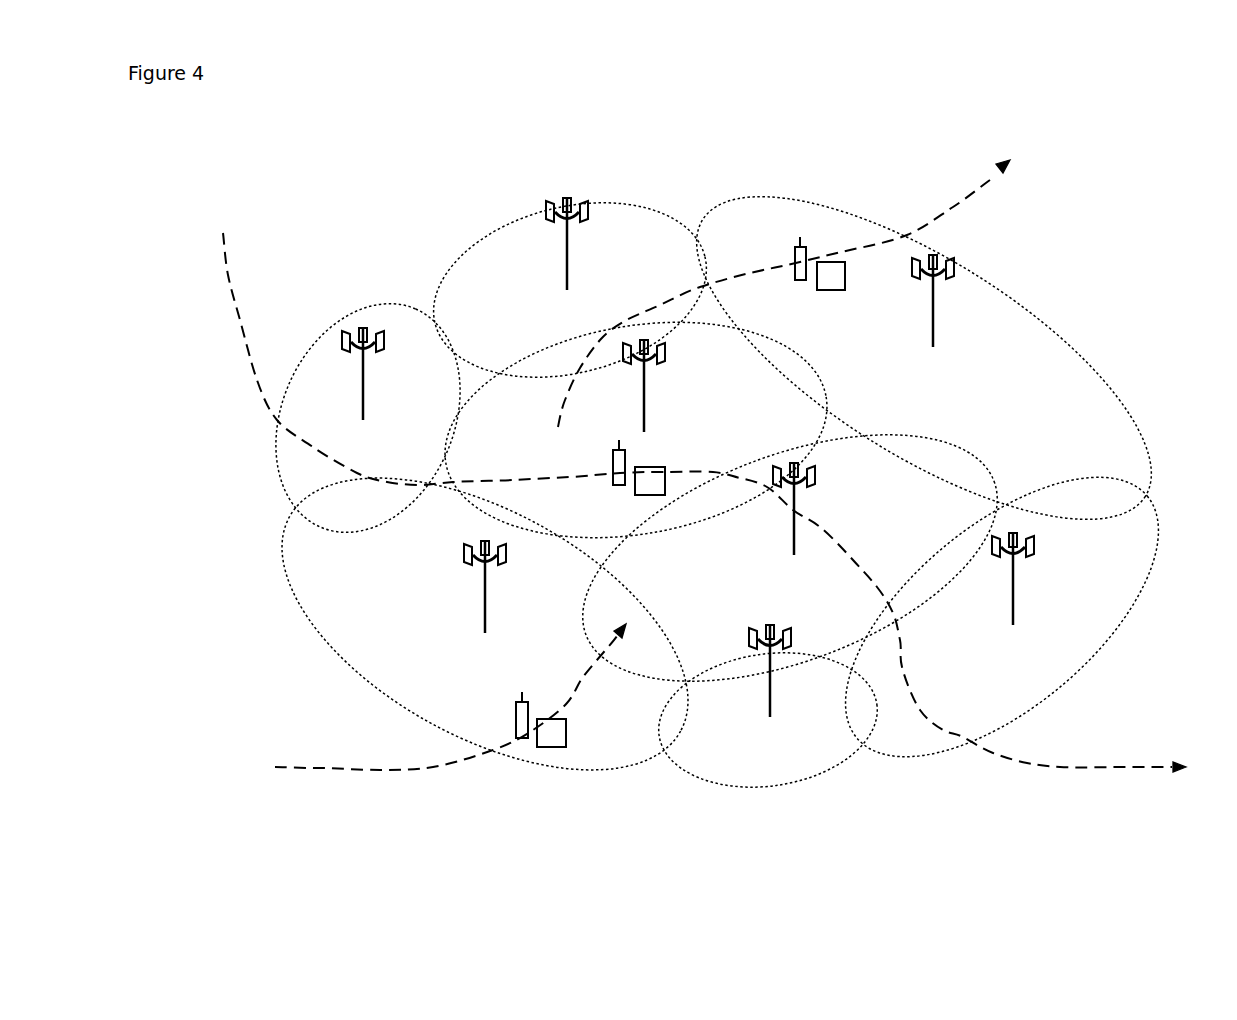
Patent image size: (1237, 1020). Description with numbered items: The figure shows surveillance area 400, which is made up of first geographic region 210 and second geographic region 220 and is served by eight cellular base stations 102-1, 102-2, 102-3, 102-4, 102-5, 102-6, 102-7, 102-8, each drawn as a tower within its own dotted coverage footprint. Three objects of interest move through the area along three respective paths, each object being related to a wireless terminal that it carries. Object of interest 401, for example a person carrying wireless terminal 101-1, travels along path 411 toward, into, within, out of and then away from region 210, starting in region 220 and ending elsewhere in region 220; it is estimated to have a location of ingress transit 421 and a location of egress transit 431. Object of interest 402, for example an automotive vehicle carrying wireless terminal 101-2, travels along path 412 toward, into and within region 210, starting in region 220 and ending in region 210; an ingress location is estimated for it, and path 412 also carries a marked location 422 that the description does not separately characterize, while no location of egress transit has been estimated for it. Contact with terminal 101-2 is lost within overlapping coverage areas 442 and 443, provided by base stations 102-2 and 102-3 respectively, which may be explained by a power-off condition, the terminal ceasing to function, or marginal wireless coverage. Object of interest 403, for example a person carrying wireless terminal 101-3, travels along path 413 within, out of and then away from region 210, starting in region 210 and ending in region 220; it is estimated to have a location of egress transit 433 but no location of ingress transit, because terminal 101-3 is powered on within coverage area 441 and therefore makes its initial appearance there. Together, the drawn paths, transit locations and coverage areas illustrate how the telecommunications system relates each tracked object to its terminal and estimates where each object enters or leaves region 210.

The surveillance area 400 is at (621, 109).
The first geographic region 210 is at (570, 272).
The second geographic region 220 is at (273, 164).
The wireless terminal 101-1 is at (578, 460).
The wireless terminal 101-2 is at (481, 712).
The wireless terminal 101-3 is at (759, 256).
The cellular base station 102-1 is at (675, 386).
The cellular base station 102-2 is at (834, 509).
The cellular base station 102-3 is at (455, 587).
The cellular base station 102-4 is at (398, 374).
The cellular base station 102-5 is at (600, 244).
The cellular base station 102-6 is at (903, 301).
The cellular base station 102-7 is at (1045, 579).
The cellular base station 102-8 is at (739, 671).
The object of interest 401 is at (684, 470).
The object of interest 402 is at (586, 721).
The object of interest 403 is at (801, 286).
The path 411 is at (704, 502).
The path 412 is at (429, 697).
The path 413 is at (1020, 203).
The location of ingress transit 421 is at (229, 446).
The handover point 422 is at (455, 780).
The location of egress transit 431 is at (920, 770).
The location of egress transit 433 is at (784, 293).
The coverage area 441 is at (485, 441).
The coverage area 442 is at (645, 570).
The coverage area 443 is at (683, 603).